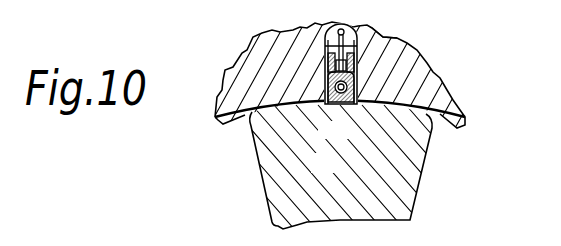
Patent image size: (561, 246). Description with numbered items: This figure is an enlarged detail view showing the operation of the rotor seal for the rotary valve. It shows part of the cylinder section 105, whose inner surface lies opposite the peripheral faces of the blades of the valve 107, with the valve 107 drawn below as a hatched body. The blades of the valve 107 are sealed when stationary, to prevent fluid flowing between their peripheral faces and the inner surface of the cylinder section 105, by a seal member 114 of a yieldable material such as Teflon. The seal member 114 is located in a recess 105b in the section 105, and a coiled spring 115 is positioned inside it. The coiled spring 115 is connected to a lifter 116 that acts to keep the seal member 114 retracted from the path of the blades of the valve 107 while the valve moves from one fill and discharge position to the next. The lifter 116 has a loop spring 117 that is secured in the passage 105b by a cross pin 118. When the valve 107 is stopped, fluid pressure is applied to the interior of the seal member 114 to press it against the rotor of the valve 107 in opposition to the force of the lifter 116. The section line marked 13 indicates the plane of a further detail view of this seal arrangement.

The cylinder section 105 is at (443, 79).
The recess 105b is at (388, 37).
The valve 107 is at (413, 201).
The seal member 114 is at (334, 130).
The coiled spring 115 is at (355, 88).
The lifter 116 is at (328, 70).
The loop spring 117 is at (326, 44).
The cross pin 118 is at (358, 28).
The section line 13- 13 is at (351, 4).